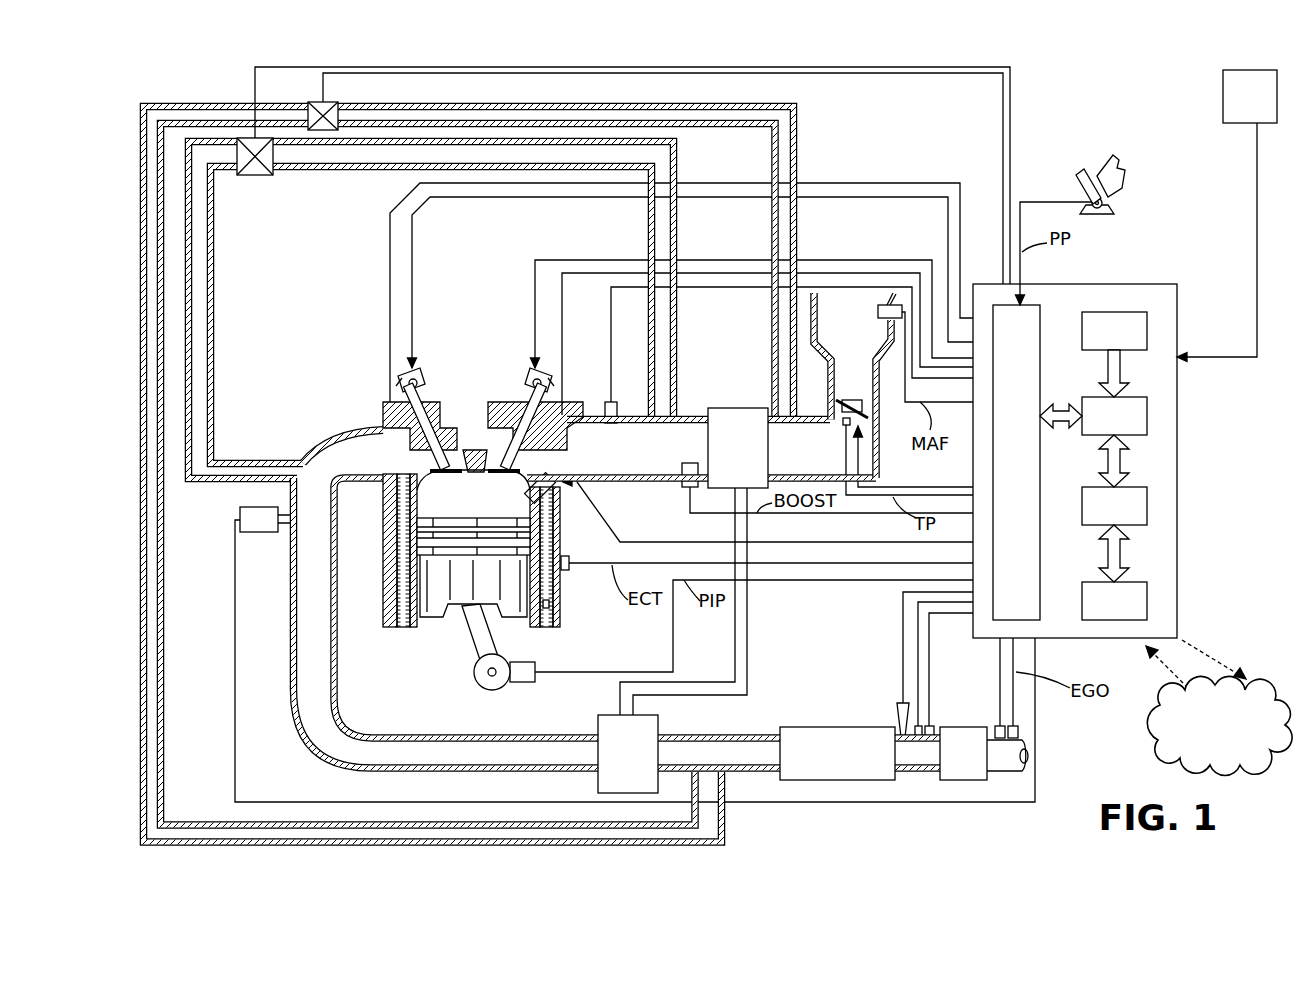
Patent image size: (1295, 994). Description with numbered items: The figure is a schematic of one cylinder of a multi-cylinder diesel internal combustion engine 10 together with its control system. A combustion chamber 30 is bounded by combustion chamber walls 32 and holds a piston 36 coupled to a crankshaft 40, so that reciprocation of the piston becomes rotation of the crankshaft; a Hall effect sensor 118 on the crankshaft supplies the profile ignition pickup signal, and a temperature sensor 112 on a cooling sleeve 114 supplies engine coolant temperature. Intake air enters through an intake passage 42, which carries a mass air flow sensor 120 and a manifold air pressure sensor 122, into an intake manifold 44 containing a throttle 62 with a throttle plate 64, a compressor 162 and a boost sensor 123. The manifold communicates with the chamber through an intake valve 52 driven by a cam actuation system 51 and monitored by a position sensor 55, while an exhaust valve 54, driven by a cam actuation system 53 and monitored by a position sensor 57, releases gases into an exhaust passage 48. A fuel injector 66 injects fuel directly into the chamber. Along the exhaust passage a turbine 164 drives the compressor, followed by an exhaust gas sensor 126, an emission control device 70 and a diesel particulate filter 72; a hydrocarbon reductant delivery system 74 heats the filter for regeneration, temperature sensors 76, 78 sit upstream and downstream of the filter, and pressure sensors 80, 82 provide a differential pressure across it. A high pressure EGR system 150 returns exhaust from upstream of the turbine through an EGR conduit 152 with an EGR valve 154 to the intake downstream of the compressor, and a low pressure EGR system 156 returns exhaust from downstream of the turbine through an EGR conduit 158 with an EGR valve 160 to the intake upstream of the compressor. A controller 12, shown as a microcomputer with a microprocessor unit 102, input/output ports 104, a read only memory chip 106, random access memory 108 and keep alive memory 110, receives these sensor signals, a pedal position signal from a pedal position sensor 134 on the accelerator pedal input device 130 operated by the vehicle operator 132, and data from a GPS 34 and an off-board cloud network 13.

The internal combustion engine 10 is at (328, 353).
The controller 12 is at (1178, 284).
The off-board cloud network 13 is at (1150, 738).
The combustion chamber 30 is at (400, 575).
The combustion chamber walls 32 is at (408, 625).
The GPS 34 is at (1227, 216).
The piston 36 is at (464, 575).
The crankshaft 40 is at (482, 688).
The intake passage 42 is at (840, 333).
The intake manifold 44 is at (608, 450).
The exhaust passage 48 is at (342, 467).
The cam actuation system 51 is at (533, 372).
The intake valve 52 is at (512, 466).
The cam actuation system 53 is at (414, 372).
The exhaust valve 54 is at (432, 468).
The position sensor 55 is at (548, 390).
The position sensor 57 is at (398, 383).
The throttle 62 is at (866, 411).
The throttle plate 64 is at (840, 400).
The fuel injector 66 is at (562, 495).
The emission control device 70 is at (837, 753).
The diesel particulate filter 72 is at (984, 753).
The hydrocarbon reductant delivery system 74 is at (900, 712).
The temperature sensor 76 is at (919, 724).
The temperature sensor 78 is at (998, 724).
The pressure sensor 80 is at (934, 728).
The pressure sensor 82 is at (1018, 720).
The microprocessor unit 102 is at (1147, 412).
The input/output ports 104 is at (1042, 305).
The read only memory chip 106 is at (1147, 325).
The random access memory 108 is at (1147, 500).
The keep alive memory 110 is at (1147, 592).
The temperature sensor 112 is at (570, 570).
The cooling sleeve 114 is at (550, 608).
The Hall effect sensor 118 is at (525, 685).
The mass air flow sensor 120 is at (900, 304).
The manifold air pressure sensor 122 is at (607, 405).
The sensor 123 is at (685, 487).
The exhaust gas sensor 126 is at (240, 512).
The input device 130 is at (1083, 183).
The vehicle operator 132 is at (1125, 172).
The pedal position sensor 134 is at (1115, 210).
The high pressure EGR system 150 is at (230, 330).
The EGR conduit 152 is at (213, 270).
The EGR valve 154 is at (262, 175).
The low pressure EGR system 156 is at (182, 750).
The EGR conduit 158 is at (165, 648).
The EGR valve 160 is at (328, 102).
The compressor 162 is at (723, 458).
The turbine 164 is at (613, 765).